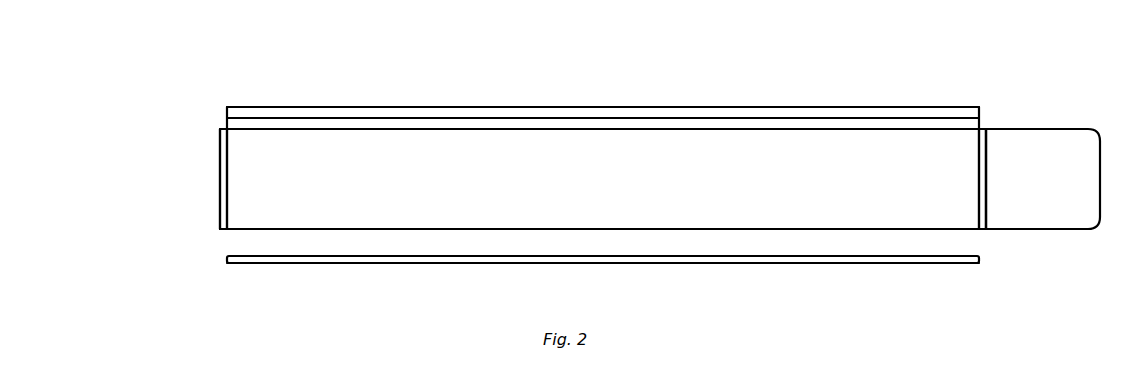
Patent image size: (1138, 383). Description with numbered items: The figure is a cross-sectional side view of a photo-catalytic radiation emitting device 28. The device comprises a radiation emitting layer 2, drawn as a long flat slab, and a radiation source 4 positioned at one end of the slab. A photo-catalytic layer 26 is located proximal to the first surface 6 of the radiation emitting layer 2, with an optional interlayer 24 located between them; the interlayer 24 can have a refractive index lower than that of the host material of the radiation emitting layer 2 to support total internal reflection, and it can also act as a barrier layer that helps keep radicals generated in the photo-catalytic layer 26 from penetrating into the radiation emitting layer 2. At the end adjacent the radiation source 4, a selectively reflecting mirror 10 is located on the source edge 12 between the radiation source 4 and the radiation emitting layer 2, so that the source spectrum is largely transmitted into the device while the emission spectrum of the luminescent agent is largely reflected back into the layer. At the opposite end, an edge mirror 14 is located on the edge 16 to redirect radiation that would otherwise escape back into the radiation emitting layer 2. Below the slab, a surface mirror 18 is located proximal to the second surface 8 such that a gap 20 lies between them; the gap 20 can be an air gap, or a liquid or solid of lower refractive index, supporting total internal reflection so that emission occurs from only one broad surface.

The photo-catalytic radiation emitting device 28 is at (156, 94).
The radiation emitting layer 2 is at (767, 195).
The radiation source 4 is at (1038, 133).
The first surface 6 is at (500, 130).
The second surface 8 is at (480, 230).
The selectively reflecting mirror 10 is at (983, 200).
The source edge 12 is at (977, 183).
The edge mirror 14 is at (220, 197).
The edge 16 is at (228, 178).
The surface mirror 18 is at (703, 263).
The gap 20 is at (328, 242).
The interlayer 24 is at (715, 123).
The photo-catalytic layer 26 is at (617, 113).